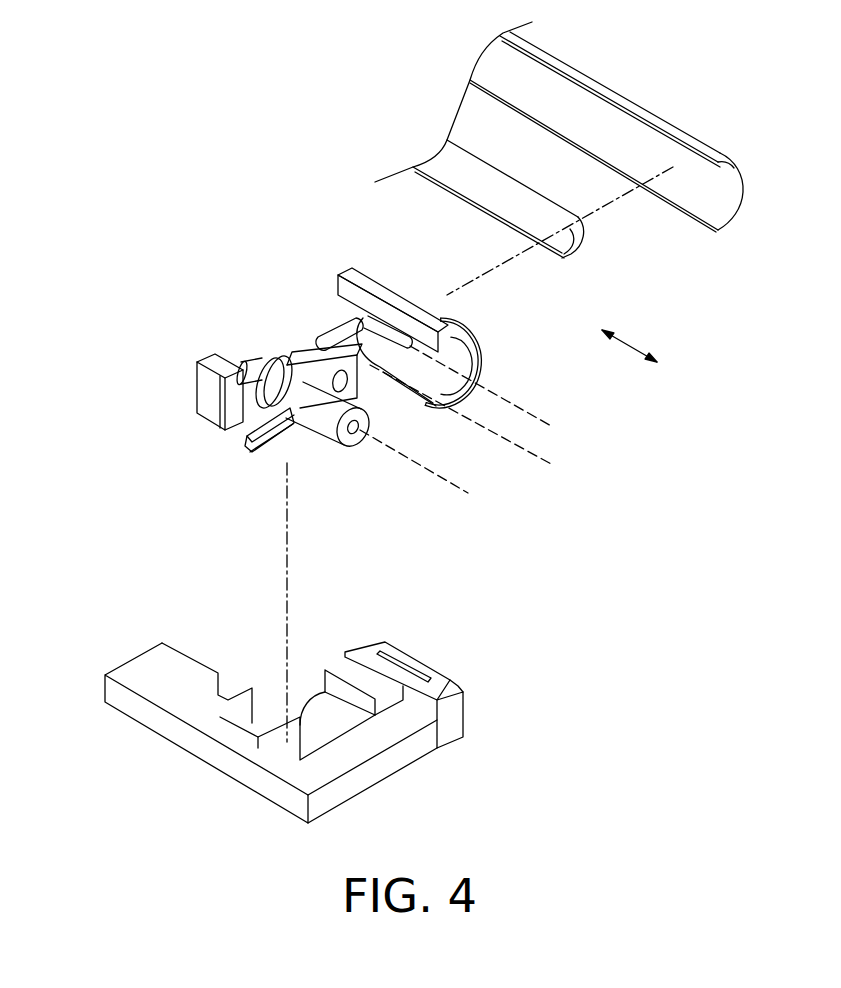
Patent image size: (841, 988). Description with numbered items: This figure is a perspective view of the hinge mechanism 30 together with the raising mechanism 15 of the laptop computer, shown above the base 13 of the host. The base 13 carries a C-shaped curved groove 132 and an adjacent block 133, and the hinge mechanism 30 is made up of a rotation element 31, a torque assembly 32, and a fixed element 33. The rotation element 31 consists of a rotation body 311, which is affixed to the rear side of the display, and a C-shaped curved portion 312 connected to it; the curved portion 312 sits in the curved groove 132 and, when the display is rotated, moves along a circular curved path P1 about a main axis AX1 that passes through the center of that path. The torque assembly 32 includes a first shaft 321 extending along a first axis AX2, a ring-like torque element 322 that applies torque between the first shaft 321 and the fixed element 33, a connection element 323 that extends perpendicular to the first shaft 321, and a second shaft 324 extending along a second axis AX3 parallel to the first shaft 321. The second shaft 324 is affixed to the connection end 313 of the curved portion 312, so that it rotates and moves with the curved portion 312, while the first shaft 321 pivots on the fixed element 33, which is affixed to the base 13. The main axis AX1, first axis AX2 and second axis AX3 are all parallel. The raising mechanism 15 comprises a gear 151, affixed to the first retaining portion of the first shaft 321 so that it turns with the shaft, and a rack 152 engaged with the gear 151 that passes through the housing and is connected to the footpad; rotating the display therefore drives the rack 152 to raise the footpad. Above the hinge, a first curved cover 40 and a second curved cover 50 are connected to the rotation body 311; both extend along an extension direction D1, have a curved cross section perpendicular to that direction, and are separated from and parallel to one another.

The base 13 is at (324, 699).
The curved groove 132 is at (430, 676).
The block 133 is at (365, 643).
The raising mechanism 15 is at (105, 343).
The gear 151 is at (237, 340).
The rack 152 is at (207, 400).
The hinge mechanism 30 is at (122, 110).
The rotation element 31 is at (413, 334).
The rotation body 311 is at (378, 280).
The curved portion 312 is at (468, 316).
The connection end 313 is at (403, 403).
The torque assembly 32 is at (254, 395).
The first shaft 321 is at (358, 432).
The torque element 322 is at (247, 438).
The connection element 323 is at (283, 360).
The second shaft 324 is at (350, 322).
The fixed element 33 is at (268, 458).
The first curved cover 40 is at (743, 182).
The second curved cover 50 is at (583, 232).
The main axis AX1 is at (514, 403).
The first axis AX2 is at (408, 586).
The second axis AX3 is at (494, 431).
The curved path P1 is at (481, 347).
The extension direction D1 is at (638, 338).